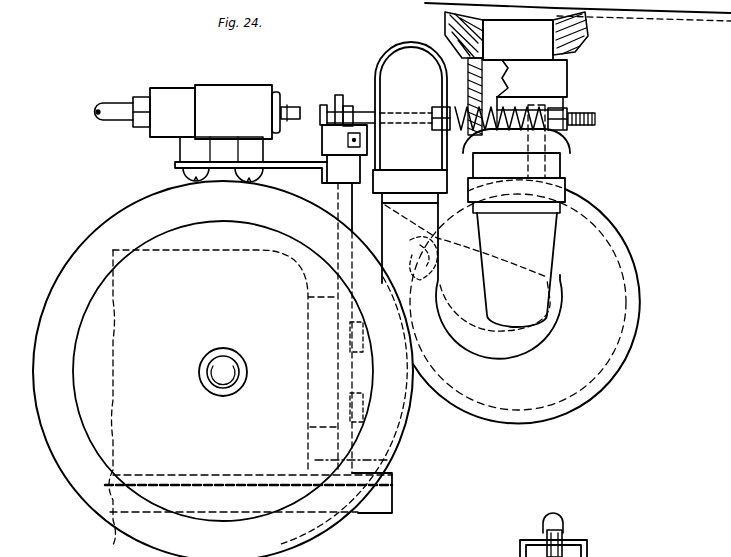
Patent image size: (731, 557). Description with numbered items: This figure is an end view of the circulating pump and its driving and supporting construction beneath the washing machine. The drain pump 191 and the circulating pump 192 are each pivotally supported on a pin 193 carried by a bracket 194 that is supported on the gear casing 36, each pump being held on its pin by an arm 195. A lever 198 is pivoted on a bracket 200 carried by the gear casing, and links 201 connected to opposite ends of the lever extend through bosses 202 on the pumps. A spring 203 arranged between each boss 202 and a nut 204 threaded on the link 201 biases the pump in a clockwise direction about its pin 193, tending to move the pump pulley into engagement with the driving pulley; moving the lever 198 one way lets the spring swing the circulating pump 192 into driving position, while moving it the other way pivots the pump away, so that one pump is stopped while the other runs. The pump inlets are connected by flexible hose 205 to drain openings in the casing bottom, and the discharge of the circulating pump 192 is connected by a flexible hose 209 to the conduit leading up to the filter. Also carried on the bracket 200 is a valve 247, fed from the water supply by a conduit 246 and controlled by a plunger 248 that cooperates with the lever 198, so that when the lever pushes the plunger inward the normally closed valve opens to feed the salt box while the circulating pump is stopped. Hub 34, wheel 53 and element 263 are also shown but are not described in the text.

The hub 34 is at (232, 363).
The gear casing 36 is at (217, 250).
The drive wheel 53 is at (70, 260).
The drain pump 191 is at (623, 277).
The circulating pump 192 is at (620, 230).
The pin 193 is at (467, 268).
The bracket 194 is at (367, 200).
The arm 195 is at (513, 260).
The lever 198 is at (347, 130).
The bracket 200 is at (345, 200).
The link 201 is at (346, 106).
The boss 202 is at (547, 165).
The spring 203 is at (455, 129).
The nut 204 is at (444, 107).
The flexible hose 205 is at (565, 136).
The flexible hose 209 is at (390, 60).
The conduit 246 is at (107, 106).
The valve 247 is at (215, 90).
The plunger 248 is at (290, 107).
The clip 263 is at (575, 535).